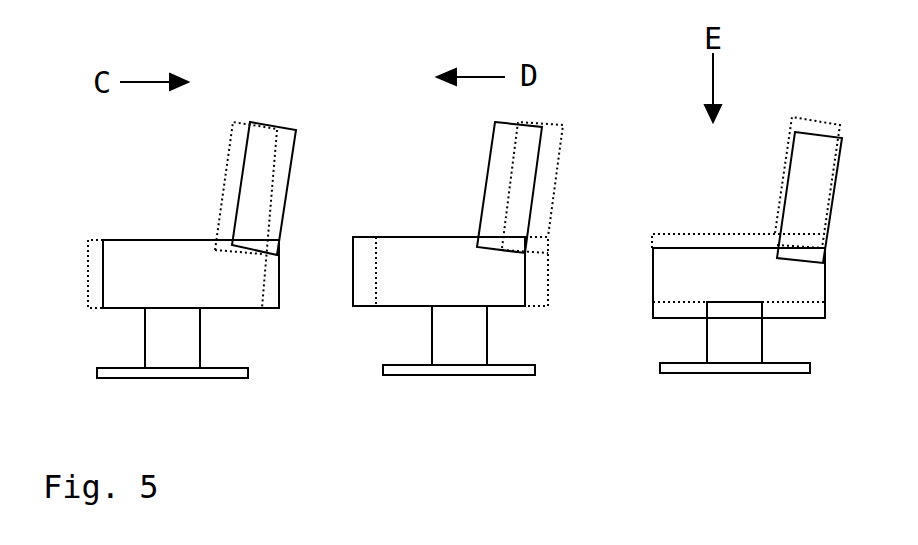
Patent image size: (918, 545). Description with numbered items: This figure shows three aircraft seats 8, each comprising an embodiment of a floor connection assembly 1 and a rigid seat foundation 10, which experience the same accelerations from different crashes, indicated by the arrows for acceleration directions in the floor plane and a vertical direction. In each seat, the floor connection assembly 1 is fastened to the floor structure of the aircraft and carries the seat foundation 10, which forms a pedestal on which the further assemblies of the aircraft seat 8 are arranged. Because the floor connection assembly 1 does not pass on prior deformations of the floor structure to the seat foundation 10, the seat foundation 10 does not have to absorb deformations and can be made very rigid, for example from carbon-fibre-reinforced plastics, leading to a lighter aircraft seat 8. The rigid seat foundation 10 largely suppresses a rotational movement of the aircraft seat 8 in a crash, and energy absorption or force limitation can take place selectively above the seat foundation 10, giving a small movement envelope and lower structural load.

The floor connection assembly 1 is at (220, 373).
The aircraft seat 8 is at (190, 252).
The seat foundation 10 is at (177, 340).